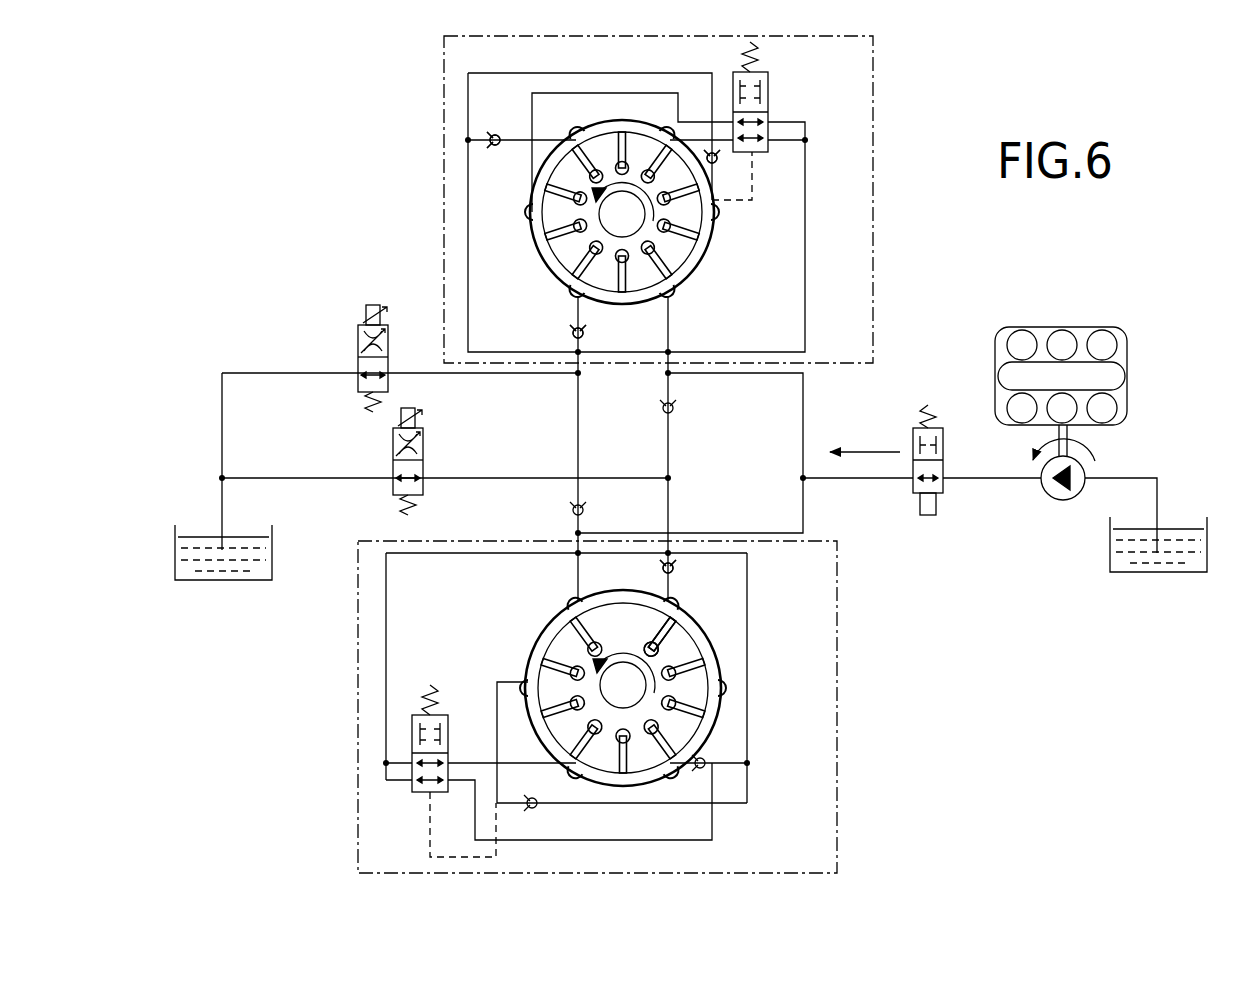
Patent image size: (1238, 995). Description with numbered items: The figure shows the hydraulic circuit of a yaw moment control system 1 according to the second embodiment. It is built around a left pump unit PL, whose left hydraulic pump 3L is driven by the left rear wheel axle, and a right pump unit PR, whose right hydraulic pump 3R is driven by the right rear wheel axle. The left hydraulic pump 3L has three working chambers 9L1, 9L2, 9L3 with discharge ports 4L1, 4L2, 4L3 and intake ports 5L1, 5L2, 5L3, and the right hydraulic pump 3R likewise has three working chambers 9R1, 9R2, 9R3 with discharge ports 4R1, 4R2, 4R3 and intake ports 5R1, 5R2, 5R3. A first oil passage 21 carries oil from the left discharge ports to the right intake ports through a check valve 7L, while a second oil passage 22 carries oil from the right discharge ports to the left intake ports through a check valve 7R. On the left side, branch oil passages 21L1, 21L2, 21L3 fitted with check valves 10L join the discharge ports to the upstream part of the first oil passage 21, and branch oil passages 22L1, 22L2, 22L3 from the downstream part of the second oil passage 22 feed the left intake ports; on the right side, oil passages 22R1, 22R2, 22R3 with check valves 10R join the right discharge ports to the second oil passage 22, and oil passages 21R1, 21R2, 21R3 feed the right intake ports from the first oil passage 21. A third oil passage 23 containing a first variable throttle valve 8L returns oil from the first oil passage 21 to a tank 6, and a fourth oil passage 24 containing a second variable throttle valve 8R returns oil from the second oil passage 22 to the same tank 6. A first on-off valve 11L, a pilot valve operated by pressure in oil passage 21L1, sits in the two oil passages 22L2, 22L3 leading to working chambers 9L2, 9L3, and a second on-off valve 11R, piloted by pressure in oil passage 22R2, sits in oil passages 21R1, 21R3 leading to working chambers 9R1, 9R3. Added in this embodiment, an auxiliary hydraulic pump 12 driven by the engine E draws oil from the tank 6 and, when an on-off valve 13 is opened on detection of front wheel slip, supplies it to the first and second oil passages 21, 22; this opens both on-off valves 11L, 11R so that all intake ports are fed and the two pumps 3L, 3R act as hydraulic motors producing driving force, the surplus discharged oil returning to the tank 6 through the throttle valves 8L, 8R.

The yaw moment control system 1 is at (318, 650).
The right hydraulic pump 3R is at (590, 204).
The left hydraulic pump 3L is at (655, 698).
The discharge port 4R1 is at (578, 298).
The discharge port 4R2 is at (714, 217).
The discharge port 4R3 is at (573, 137).
The discharge port 4L1 is at (532, 694).
The discharge port 4L2 is at (670, 766).
The discharge port 4L3 is at (665, 600).
The intake port 5R1 is at (528, 213).
The intake port 5R2 is at (666, 306).
The intake port 5R3 is at (667, 130).
The intake port 5L1 is at (585, 598).
The intake port 5L2 is at (577, 777).
The intake port 5L3 is at (717, 679).
The tank 6 is at (272, 548).
The check valve 7R is at (585, 507).
The check valve 7L is at (672, 402).
The second variable throttle valve 8R is at (352, 350).
The first variable throttle valve 8L is at (385, 488).
The working chamber 9R1 is at (547, 272).
The working chamber 9R2 is at (698, 272).
The working chamber 9R3 is at (603, 123).
The working chamber 9L1 is at (543, 632).
The working chamber 9L2 is at (637, 777).
The working chamber 9L3 is at (700, 625).
The check valve 10R is at (495, 148).
The check valve 10L is at (667, 562).
The second on-off valve 11R is at (775, 90).
The first on-off valve 11L is at (408, 802).
The auxiliary hydraulic pump 12 is at (1076, 500).
The on-off valve 13 is at (905, 490).
The first oil passage 21 is at (667, 450).
The second oil passage 22 is at (580, 419).
The third oil passage 23 is at (470, 479).
The fourth oil passage 24 is at (467, 375).
The oil passage 21R1 is at (835, 104).
The oil passage 21R2 is at (670, 326).
The oil passage 21R3 is at (804, 140).
The oil passage 22R1 is at (573, 320).
The oil passage 22R2 is at (713, 92).
The oil passage 22R3 is at (518, 140).
The oil passage 21L1 is at (507, 678).
The oil passage 21L2 is at (723, 766).
The oil passage 21L3 is at (672, 564).
The oil passage 22L1 is at (577, 575).
The oil passage 22L2 is at (471, 758).
The oil passage 22L3 is at (517, 842).
The engine E is at (1097, 318).
The right pump unit PR is at (440, 143).
The left pump unit PL is at (850, 588).